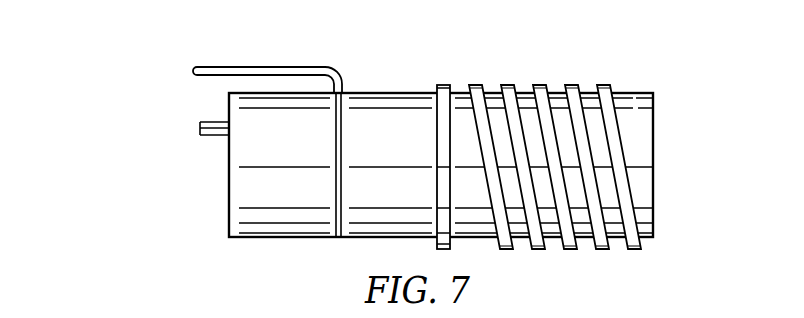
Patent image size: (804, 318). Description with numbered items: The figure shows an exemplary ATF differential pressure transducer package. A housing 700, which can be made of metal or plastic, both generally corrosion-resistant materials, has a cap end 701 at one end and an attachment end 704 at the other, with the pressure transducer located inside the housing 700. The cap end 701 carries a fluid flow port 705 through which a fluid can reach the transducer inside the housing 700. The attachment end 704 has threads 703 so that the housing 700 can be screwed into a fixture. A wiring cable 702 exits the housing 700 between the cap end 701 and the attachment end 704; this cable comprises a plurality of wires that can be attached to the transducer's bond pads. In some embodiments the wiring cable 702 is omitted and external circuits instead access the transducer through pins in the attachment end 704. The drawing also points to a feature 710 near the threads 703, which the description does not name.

The housing 700 is at (385, 139).
The cap end 701 is at (238, 224).
The wiring cable 702 is at (333, 68).
The threads 703 is at (472, 85).
The attachment end 704 is at (642, 123).
The fluid flow port 705 is at (200, 127).
The collar ring 710 is at (420, 91).